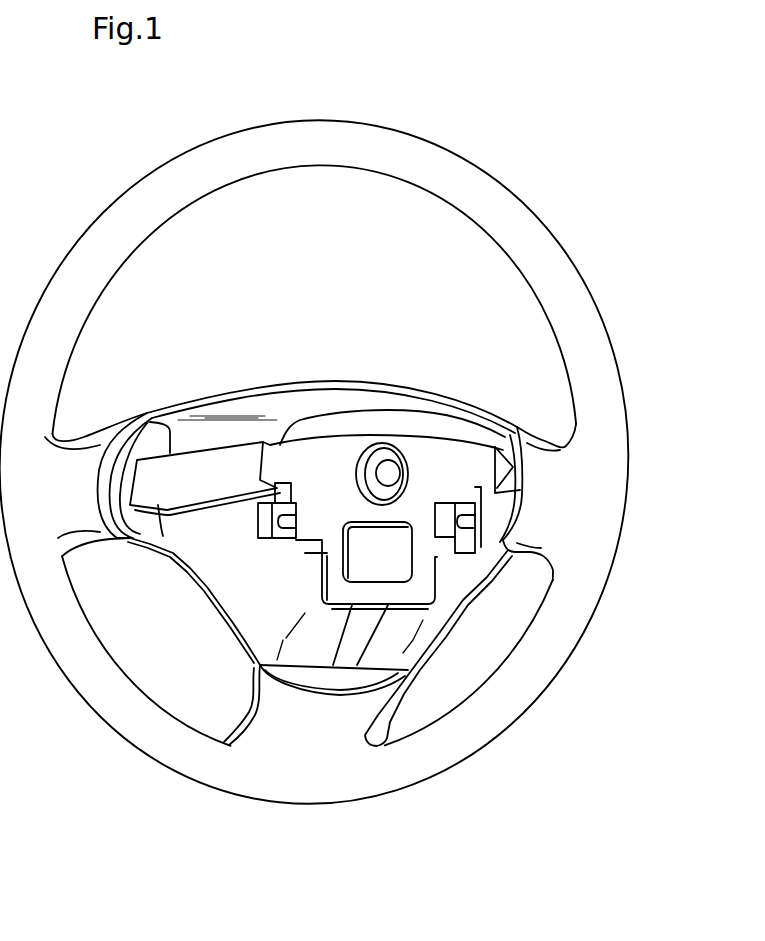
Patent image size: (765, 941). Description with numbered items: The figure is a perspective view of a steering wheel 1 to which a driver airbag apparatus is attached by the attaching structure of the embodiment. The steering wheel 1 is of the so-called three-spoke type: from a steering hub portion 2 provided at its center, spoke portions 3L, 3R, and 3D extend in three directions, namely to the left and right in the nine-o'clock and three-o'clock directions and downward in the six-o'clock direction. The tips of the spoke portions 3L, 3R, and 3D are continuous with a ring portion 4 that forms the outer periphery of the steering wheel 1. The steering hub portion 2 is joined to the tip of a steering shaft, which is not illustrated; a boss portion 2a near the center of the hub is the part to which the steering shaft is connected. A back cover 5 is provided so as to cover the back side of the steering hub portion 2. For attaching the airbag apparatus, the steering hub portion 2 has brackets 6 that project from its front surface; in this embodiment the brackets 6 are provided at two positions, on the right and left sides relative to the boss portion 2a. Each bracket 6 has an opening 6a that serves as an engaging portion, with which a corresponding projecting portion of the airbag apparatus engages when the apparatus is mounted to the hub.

The steering wheel 1 is at (454, 146).
The steering hub portion 2 is at (422, 435).
The boss portion 2a is at (392, 473).
The spoke portion 3L is at (82, 442).
The spoke portion 3R is at (542, 432).
The spoke portion 3D is at (253, 714).
The ring portion 4 is at (132, 201).
The back cover 5 is at (284, 392).
The bracket 6 is at (258, 520).
The opening 6a is at (276, 540).